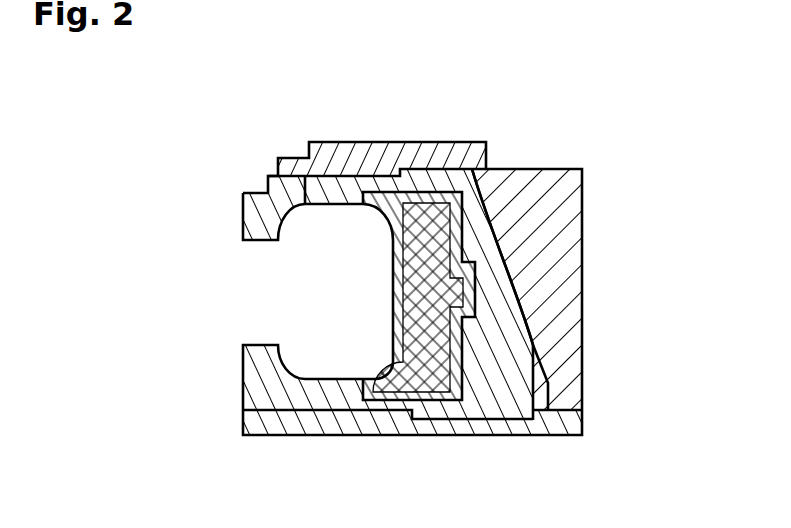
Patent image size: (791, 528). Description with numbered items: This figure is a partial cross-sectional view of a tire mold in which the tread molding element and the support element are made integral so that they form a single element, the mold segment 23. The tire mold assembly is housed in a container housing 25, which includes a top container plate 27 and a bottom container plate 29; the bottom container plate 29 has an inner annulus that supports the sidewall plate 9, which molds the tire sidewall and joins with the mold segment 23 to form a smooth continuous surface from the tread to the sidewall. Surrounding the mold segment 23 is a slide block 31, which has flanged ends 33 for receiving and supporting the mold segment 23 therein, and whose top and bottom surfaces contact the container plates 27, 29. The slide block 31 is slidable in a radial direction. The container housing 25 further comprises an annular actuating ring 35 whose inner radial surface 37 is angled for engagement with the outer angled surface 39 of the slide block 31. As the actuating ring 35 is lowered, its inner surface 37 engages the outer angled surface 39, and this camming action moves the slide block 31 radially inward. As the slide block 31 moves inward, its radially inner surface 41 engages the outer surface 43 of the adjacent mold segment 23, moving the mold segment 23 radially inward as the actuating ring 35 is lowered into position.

The second sidewall plate 9 is at (329, 398).
The mold segment 23 is at (461, 180).
The container housing 25 is at (381, 116).
The top container plate 27 is at (342, 157).
The bottom container plate 29 is at (272, 425).
The slide block 31 is at (482, 393).
The flanged end 33 is at (408, 196).
The annular actuating ring 35 is at (545, 307).
The inner radial surface 37 is at (530, 327).
The outer angled surface 39 is at (512, 272).
The radially inner surface 41 is at (465, 360).
The outer surface 43 is at (490, 247).